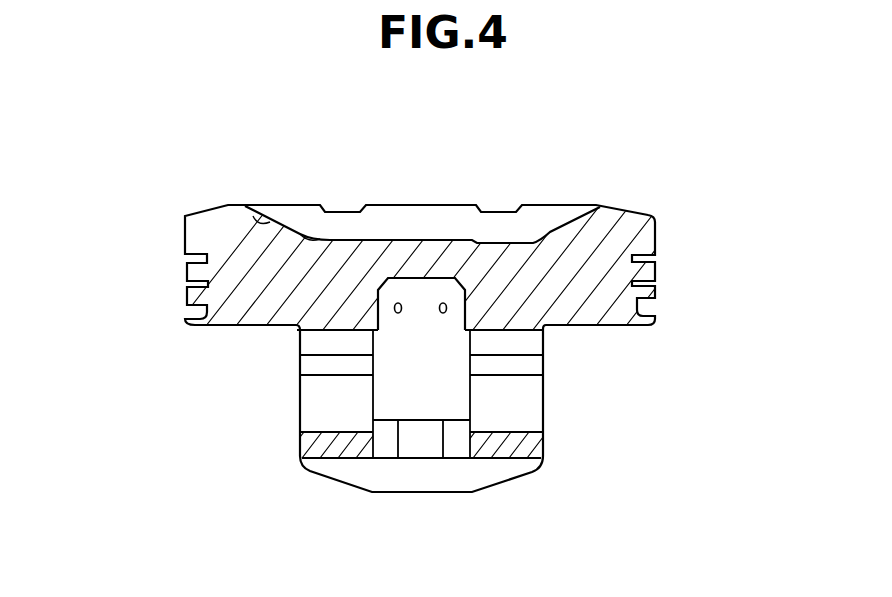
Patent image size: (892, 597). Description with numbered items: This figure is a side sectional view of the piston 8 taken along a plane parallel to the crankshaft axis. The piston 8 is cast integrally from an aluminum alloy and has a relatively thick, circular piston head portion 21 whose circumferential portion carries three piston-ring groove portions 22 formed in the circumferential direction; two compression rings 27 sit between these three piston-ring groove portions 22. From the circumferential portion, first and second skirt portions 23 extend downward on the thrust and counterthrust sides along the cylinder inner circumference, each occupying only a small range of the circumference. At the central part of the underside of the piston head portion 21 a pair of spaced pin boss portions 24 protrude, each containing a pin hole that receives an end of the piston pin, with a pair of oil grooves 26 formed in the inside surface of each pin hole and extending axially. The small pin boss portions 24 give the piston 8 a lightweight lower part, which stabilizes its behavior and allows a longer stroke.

The piston 8 is at (662, 195).
The piston head portion 21 is at (600, 247).
The piston-ring groove portions 22 is at (646, 307).
The skirt portions 23 is at (463, 474).
The pin boss portions 24 is at (335, 453).
The oil grooves 26 is at (325, 377).
The compression rings 27 is at (190, 295).